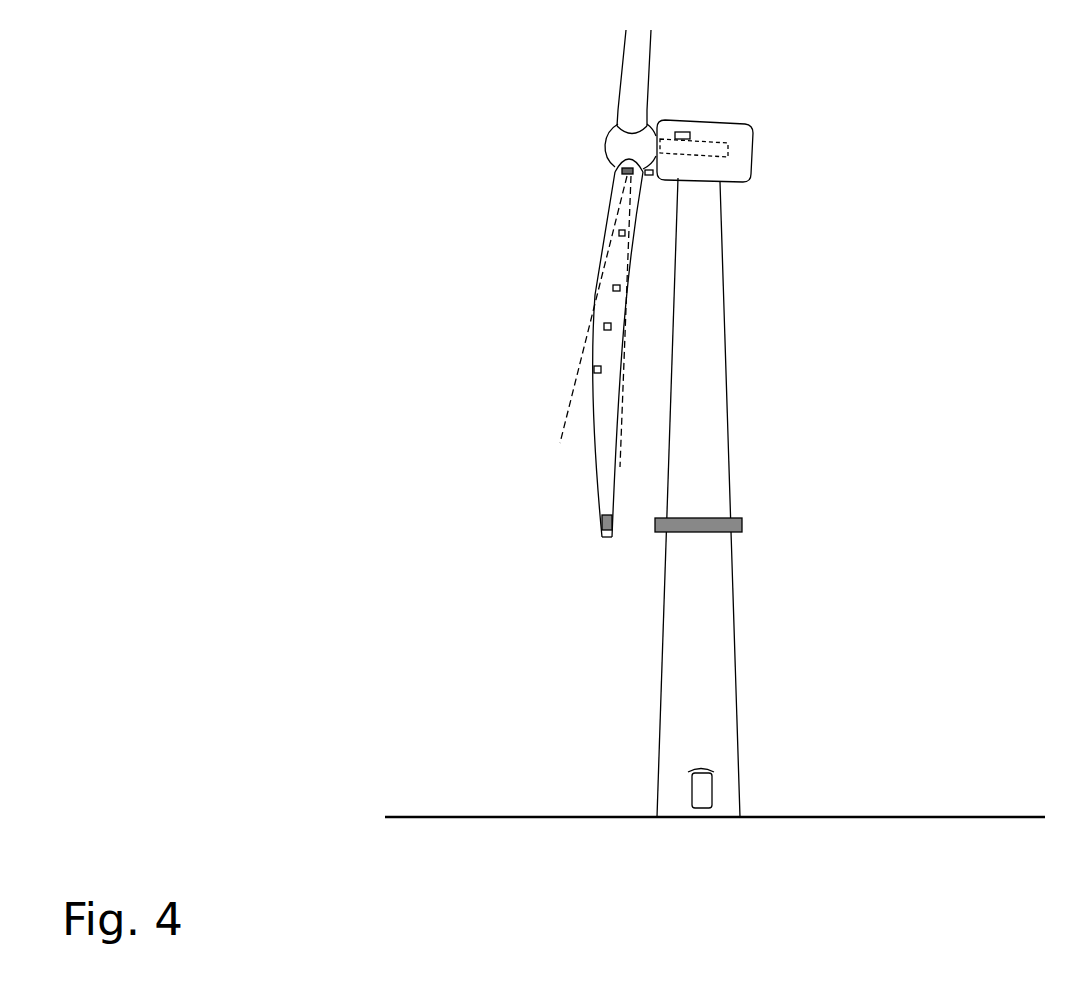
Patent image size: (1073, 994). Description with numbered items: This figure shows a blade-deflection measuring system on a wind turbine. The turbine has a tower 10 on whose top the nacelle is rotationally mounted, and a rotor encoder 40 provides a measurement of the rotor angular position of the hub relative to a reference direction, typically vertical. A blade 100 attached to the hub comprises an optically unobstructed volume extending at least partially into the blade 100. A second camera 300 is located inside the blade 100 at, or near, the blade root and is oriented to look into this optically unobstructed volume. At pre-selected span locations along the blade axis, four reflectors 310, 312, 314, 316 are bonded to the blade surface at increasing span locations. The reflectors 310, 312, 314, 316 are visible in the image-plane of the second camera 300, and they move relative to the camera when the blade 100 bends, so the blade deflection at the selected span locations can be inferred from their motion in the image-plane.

The tower 10 is at (725, 650).
The rotor encoder 40 is at (682, 131).
The blade 100 is at (600, 498).
The second camera 300 is at (622, 171).
The reflector 310 is at (619, 233).
The reflector 312 is at (613, 288).
The reflector 314 is at (604, 327).
The reflector 316 is at (594, 370).